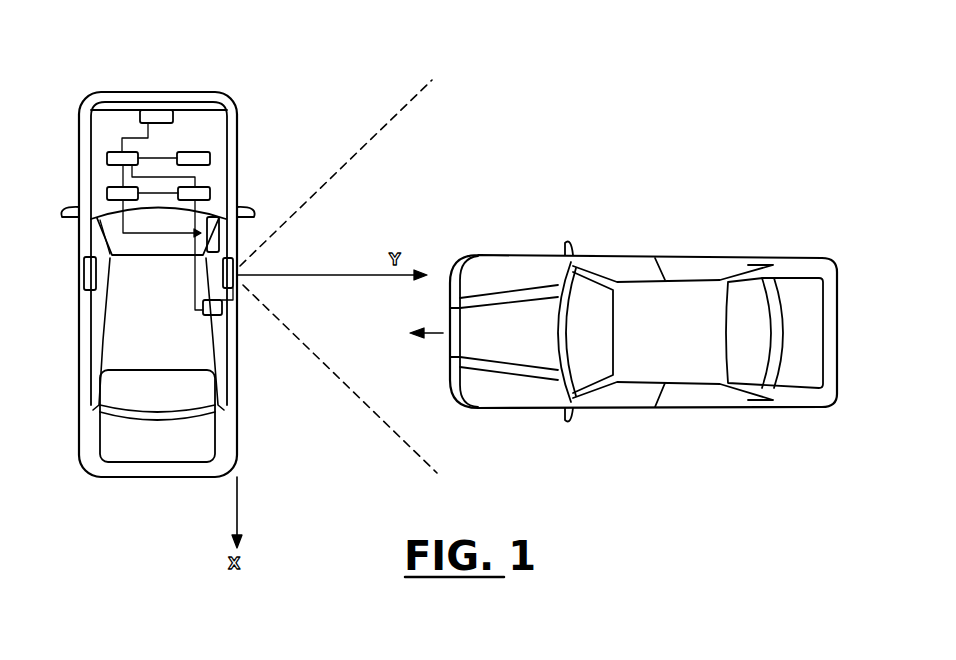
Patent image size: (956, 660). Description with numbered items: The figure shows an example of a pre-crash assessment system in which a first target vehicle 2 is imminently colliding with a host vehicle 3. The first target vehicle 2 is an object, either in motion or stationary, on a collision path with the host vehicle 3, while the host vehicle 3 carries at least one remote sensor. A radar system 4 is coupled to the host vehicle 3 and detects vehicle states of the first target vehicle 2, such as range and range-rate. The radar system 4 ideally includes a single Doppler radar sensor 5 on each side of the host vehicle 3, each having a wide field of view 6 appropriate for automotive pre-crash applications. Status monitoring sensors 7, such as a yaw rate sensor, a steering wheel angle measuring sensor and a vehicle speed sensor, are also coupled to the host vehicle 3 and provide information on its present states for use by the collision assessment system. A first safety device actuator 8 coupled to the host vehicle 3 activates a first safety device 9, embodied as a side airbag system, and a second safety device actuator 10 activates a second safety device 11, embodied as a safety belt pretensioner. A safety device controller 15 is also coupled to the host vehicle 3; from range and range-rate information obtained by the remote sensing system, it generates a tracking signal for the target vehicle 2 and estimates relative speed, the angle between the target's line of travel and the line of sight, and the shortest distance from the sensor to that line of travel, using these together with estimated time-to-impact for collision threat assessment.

The first target vehicle 2 is at (643, 257).
The host vehicle 3 is at (238, 440).
The radar system 4 is at (158, 110).
The Doppler radar sensor 5 is at (97, 278).
The field of view 6 is at (335, 371).
The status monitoring sensors 7 is at (210, 158).
The first safety device actuator 8 is at (107, 192).
The first safety device 9 is at (225, 232).
The second safety device actuator 10 is at (210, 192).
The second safety device 11 is at (203, 315).
The safety device controller 15 is at (112, 152).